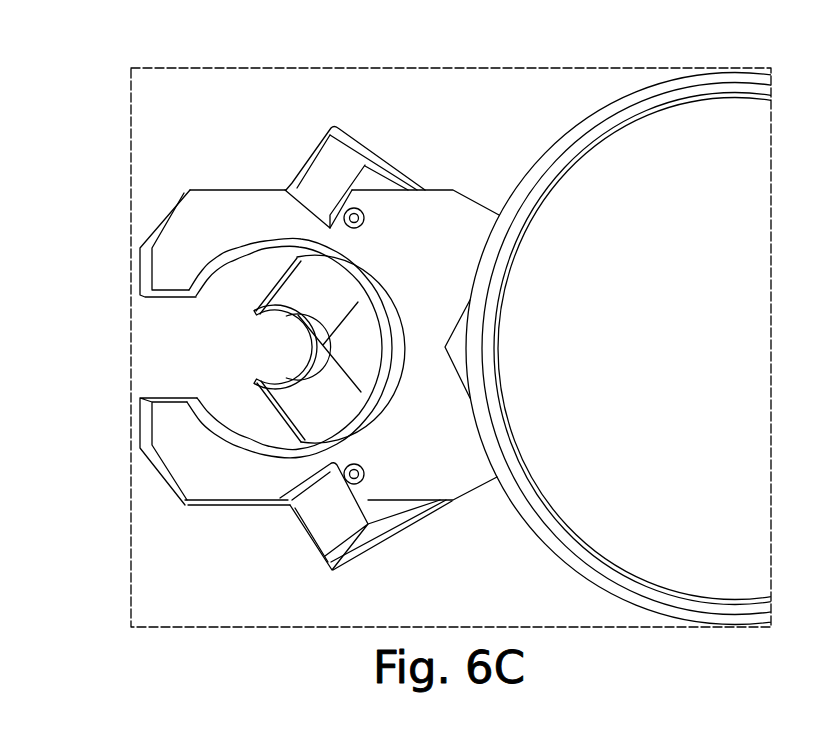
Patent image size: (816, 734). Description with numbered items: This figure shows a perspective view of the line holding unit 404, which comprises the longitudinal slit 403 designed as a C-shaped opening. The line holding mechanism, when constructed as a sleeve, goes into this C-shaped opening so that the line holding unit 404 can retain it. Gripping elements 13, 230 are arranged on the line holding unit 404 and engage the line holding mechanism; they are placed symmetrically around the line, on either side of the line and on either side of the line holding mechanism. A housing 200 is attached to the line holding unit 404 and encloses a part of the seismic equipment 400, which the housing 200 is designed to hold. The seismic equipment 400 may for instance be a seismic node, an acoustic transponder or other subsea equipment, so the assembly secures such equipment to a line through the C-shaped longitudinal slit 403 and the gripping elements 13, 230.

The seismic equipment 400 is at (558, 182).
The line holding unit 404 is at (172, 232).
The longitudinal slit 403 is at (157, 368).
The gripping element 13 is at (318, 520).
The gripping element 230 is at (355, 178).
The housing 200 is at (538, 546).